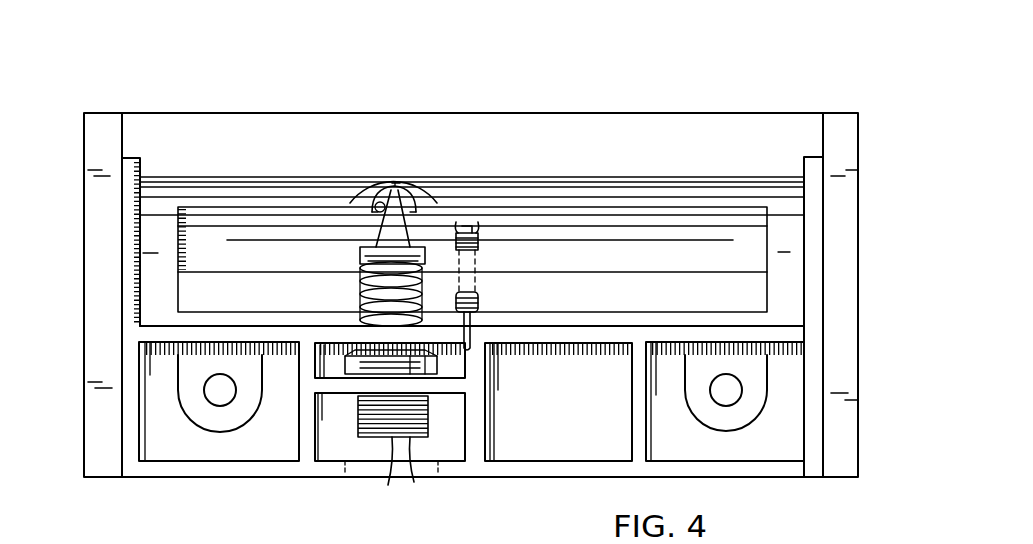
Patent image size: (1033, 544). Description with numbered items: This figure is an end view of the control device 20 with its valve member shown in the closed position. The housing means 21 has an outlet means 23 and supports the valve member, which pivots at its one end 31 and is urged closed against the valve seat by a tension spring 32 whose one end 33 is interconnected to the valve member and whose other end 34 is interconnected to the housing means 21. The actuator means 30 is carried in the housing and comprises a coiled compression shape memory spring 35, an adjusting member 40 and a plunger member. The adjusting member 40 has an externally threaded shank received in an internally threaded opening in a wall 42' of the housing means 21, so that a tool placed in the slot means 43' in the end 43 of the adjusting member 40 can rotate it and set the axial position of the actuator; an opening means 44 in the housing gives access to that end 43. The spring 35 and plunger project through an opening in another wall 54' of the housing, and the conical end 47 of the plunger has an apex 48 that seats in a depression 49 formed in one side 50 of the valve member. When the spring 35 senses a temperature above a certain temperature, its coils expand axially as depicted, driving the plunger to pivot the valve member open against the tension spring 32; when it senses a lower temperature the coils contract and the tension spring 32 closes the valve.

The control device 20 is at (722, 97).
The housing means 21 is at (856, 218).
The outlet means 23 is at (794, 282).
The actuator means 30 is at (358, 298).
The end 31 is at (197, 218).
The tension spring 32 is at (480, 300).
The one end 33 is at (470, 225).
The other end 34 is at (484, 312).
The coiled compression shape memory spring 35 is at (360, 277).
The adjusting member 40 is at (345, 361).
The wall 42' is at (453, 415).
The end 43 is at (432, 478).
The slot means 43' is at (371, 483).
The opening means 44 is at (346, 472).
The conical end 47 is at (353, 200).
The apex 48 is at (397, 183).
The depression 49 is at (412, 200).
The side 50 is at (568, 232).
The wall 54' is at (558, 402).